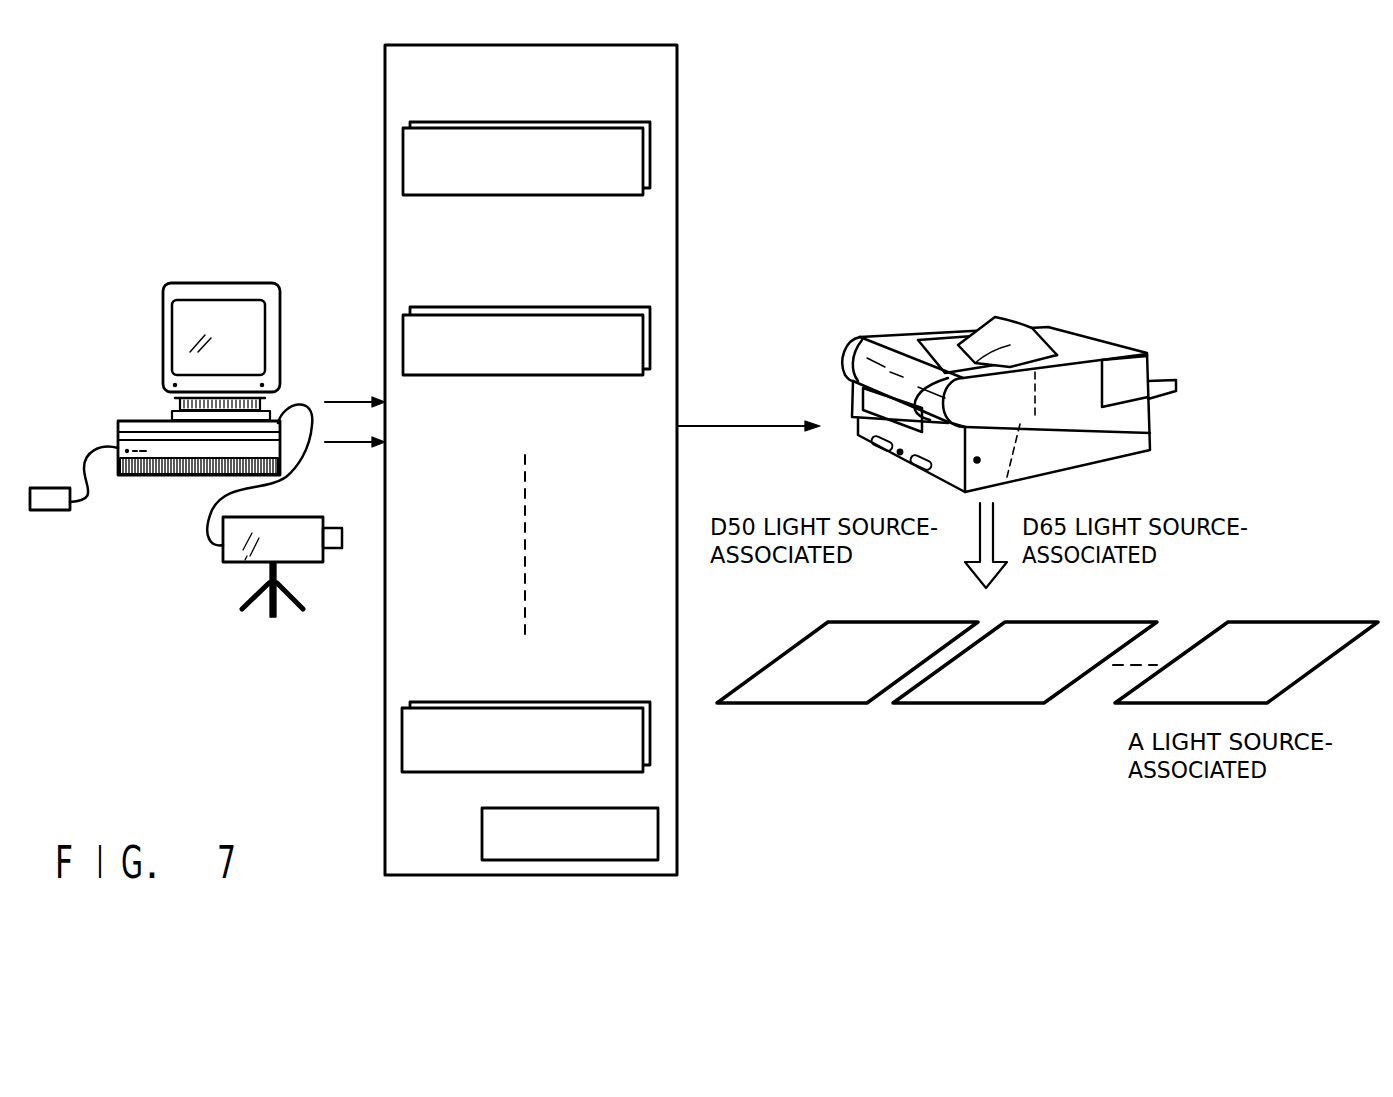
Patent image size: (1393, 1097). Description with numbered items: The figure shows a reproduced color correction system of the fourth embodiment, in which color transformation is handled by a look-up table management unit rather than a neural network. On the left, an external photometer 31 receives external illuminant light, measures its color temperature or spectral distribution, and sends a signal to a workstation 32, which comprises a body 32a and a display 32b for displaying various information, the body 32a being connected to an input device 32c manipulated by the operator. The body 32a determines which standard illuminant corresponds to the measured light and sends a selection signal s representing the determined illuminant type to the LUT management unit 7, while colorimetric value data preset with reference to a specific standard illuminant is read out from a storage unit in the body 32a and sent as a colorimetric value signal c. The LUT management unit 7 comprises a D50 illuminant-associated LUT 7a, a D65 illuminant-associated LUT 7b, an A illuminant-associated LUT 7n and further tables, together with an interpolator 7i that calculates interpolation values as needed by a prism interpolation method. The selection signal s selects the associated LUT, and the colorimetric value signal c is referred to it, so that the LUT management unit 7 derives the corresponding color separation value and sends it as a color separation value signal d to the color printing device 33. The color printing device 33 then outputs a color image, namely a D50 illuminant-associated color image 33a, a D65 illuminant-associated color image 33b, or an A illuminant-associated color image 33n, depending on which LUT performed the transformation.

The LUT management unit 7 is at (677, 262).
The D50 illuminant-associated LUT 7a is at (582, 122).
The D65 illuminant-associated LUT 7b is at (576, 307).
The A illuminant-associated LUT 7n is at (580, 702).
The interpolator 7i is at (482, 841).
The external photometer 31 is at (222, 560).
The workstation 32 is at (212, 279).
The body 32a is at (130, 421).
The display 32b is at (163, 291).
The input device 32c is at (53, 511).
The color printing device 33 is at (1009, 425).
The D50 illuminant-associated color image 33a is at (881, 621).
The D65 illuminant-associated color image 33b is at (1098, 621).
The A illuminant-associated color image 33n is at (1222, 704).
The selection signal s is at (348, 398).
The colorimetric value signal c is at (340, 448).
The color separation value signal d is at (760, 422).